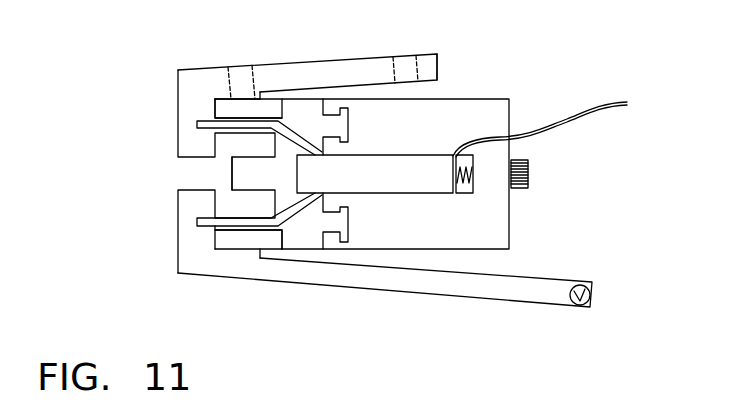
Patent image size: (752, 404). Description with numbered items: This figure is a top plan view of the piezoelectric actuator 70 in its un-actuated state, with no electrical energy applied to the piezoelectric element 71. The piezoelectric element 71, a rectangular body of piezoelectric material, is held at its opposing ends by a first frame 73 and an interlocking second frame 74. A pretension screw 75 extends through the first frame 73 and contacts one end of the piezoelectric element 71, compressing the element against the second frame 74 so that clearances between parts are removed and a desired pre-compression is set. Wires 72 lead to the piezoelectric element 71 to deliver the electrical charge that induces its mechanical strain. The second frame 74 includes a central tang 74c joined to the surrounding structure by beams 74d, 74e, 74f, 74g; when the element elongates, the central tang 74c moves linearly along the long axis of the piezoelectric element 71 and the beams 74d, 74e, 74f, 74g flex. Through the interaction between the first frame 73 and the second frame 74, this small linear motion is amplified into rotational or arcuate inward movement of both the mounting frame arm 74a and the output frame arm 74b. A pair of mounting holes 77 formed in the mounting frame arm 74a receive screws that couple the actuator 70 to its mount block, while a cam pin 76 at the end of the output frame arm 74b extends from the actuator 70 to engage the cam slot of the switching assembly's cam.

The piezoelectric actuator 70 is at (205, 286).
The piezoelectric element 71 is at (393, 181).
The wires 72 is at (572, 118).
The first frame 73 is at (478, 218).
The second frame 74 is at (299, 72).
The mounting frame arm 74a is at (430, 73).
The output frame arm 74b is at (460, 283).
The central tang 74c is at (251, 173).
The beam 74d is at (233, 117).
The beam 74e is at (215, 148).
The beam 74f is at (237, 217).
The beam 74g is at (240, 232).
The pretension screw 75 is at (520, 173).
The cam pin 76 is at (587, 281).
The mounting holes 77 is at (236, 62).